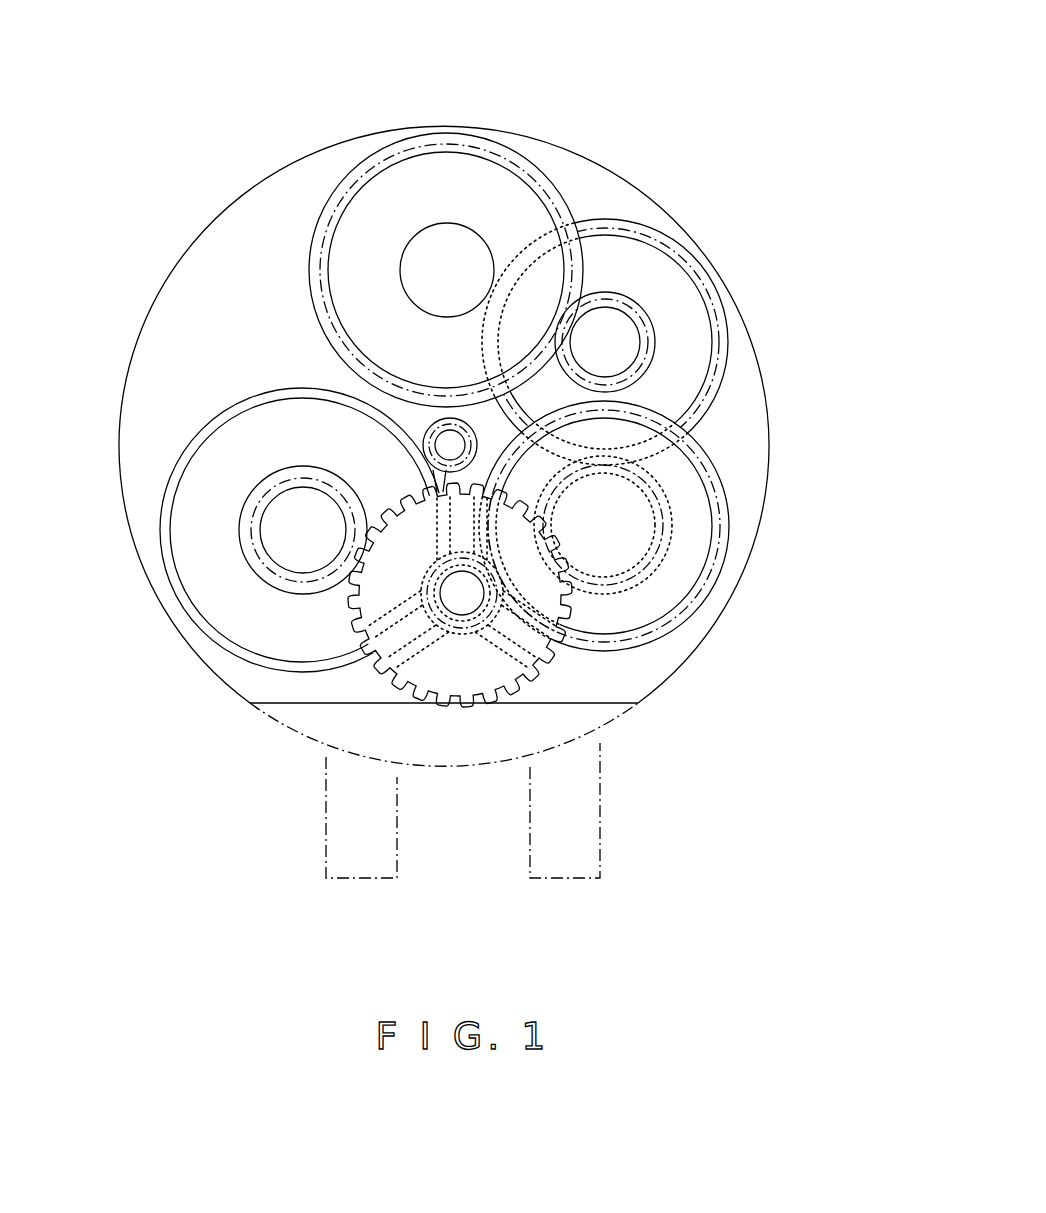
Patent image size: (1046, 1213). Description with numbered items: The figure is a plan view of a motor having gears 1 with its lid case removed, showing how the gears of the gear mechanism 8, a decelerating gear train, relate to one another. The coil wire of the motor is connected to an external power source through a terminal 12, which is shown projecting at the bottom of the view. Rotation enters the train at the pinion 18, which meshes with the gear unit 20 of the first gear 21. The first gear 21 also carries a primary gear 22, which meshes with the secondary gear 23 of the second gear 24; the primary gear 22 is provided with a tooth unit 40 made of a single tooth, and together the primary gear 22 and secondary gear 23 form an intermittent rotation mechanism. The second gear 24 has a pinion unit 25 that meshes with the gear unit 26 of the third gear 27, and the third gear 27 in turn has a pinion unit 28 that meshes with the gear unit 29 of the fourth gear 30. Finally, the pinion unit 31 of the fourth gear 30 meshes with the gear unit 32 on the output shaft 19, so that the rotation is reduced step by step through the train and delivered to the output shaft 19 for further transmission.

The motor having gears 1 is at (688, 201).
The gear mechanism 8 is at (686, 565).
The terminal 12 is at (390, 860).
The pinion 18 is at (448, 420).
The output shaft 19 is at (446, 238).
The gear unit 20 is at (170, 487).
The first gear 21 is at (251, 503).
The primary gear 22 is at (266, 572).
The secondary gear 23 is at (448, 700).
The second gear 24 is at (386, 661).
The pinion unit 25 is at (548, 642).
The gear unit 26 is at (670, 617).
The third gear 27 is at (672, 582).
The pinion unit 28 is at (668, 498).
The gear unit 29 is at (727, 353).
The fourth gear 30 is at (700, 342).
The pinion unit 31 is at (644, 315).
The gear unit 32 is at (518, 162).
The tooth unit 40 is at (357, 545).